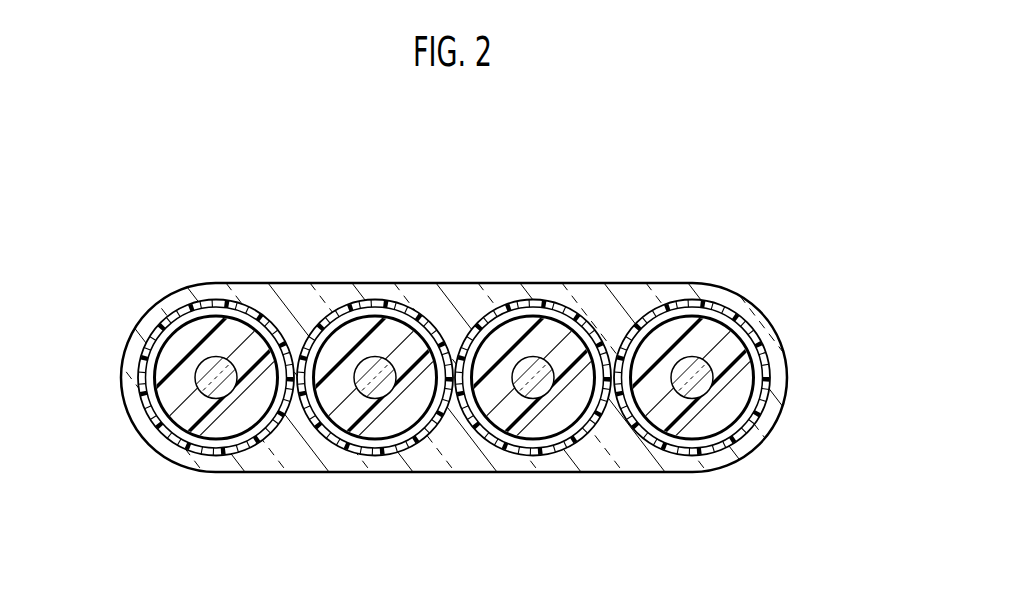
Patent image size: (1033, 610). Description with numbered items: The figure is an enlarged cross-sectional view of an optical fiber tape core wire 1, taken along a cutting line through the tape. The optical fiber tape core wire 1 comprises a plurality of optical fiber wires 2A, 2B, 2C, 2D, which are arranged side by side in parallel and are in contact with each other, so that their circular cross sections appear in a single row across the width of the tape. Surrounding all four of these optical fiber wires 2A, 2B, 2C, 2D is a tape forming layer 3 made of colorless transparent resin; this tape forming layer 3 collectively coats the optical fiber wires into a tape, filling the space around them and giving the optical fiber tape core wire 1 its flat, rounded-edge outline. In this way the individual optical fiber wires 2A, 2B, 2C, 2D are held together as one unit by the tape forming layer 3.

The optical fiber tape core wire 1 is at (465, 245).
The optical fiber wire 2A is at (208, 455).
The optical fiber wire 2B is at (367, 455).
The optical fiber wire 2C is at (528, 455).
The optical fiber wire 2D is at (687, 455).
The tape forming layer 3 is at (443, 472).